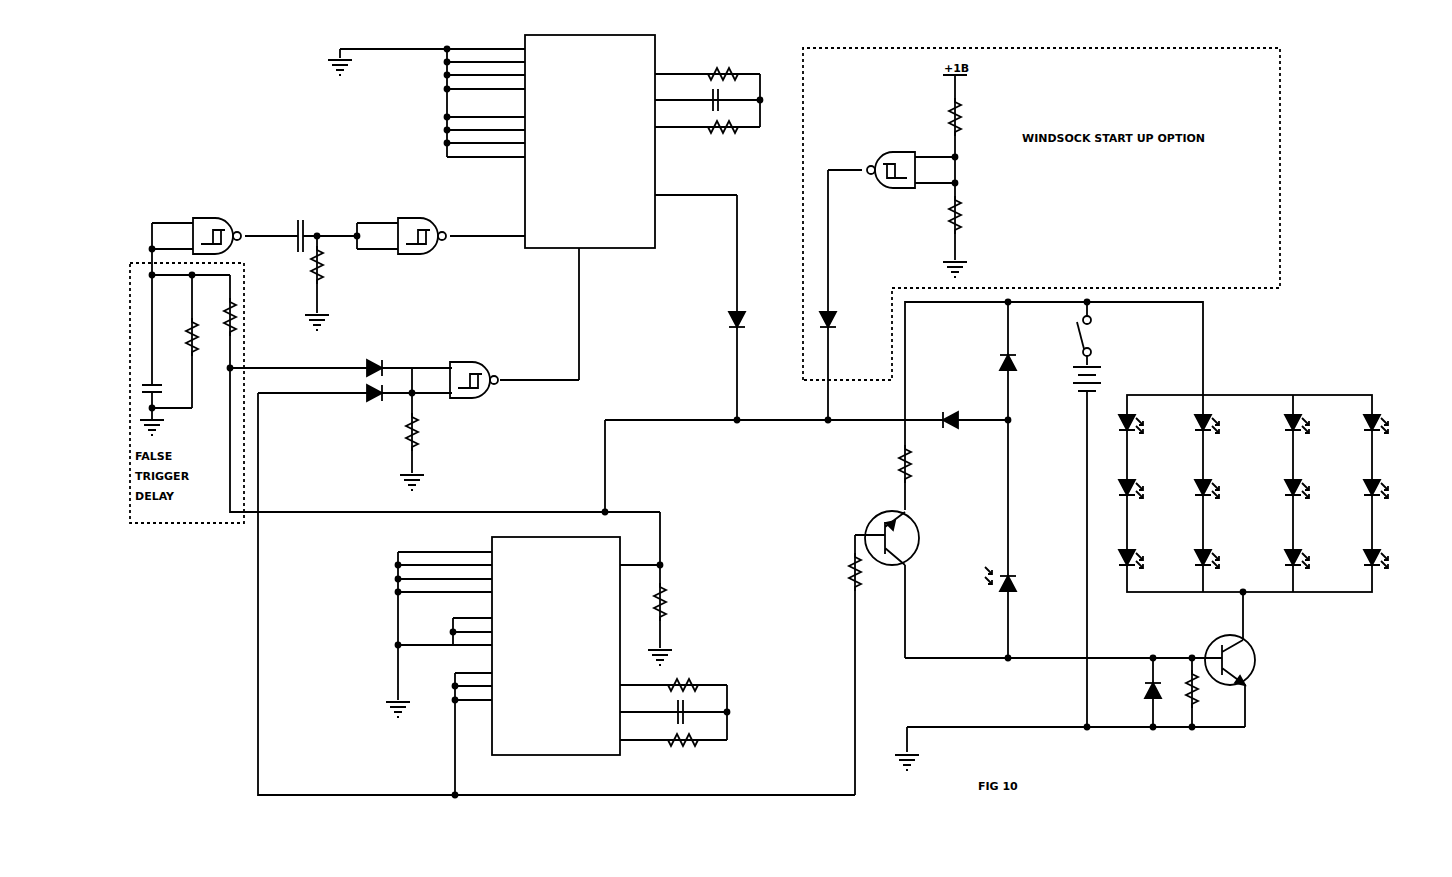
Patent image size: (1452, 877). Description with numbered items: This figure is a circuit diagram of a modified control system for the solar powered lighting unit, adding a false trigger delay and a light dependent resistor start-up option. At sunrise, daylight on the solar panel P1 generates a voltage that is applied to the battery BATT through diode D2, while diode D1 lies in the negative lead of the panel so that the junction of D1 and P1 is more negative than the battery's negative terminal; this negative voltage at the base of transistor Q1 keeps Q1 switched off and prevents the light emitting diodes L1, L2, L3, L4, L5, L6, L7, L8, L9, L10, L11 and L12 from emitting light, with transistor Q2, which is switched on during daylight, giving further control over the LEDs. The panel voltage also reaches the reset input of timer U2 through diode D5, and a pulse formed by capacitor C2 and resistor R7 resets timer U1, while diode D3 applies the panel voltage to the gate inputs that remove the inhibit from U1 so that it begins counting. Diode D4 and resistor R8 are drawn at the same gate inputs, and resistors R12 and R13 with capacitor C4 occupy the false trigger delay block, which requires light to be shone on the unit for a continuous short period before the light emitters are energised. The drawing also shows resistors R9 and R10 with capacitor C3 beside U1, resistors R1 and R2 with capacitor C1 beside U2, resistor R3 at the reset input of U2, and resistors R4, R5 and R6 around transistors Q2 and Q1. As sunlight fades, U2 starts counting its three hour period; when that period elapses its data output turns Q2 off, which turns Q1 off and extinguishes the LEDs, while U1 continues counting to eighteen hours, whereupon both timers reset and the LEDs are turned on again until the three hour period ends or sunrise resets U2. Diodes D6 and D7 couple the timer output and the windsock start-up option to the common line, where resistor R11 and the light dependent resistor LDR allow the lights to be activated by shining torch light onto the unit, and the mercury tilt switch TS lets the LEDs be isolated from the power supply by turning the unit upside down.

The timer U1 is at (545, 196).
The timer U2 is at (525, 653).
The resistor 1M R1 is at (682, 679).
The resistor 120K R2 is at (688, 748).
The resistor 33K R3 is at (670, 614).
The resistor 10K R4 is at (840, 665).
The resistor 100K R5 is at (1209, 692).
The resistor 2K2 R6 is at (919, 466).
The resistor R7 is at (331, 283).
The resistor 100K R8 is at (426, 451).
The resistor 1M R9 is at (721, 68).
The resistor 120K R10 is at (725, 135).
The resistor 470K R11 is at (978, 117).
The resistor 200K R12 is at (253, 321).
The resistor 680K R13 is at (209, 346).
The capacitor 470N C1 is at (688, 710).
The capacitor 100N C2 is at (323, 223).
The capacitor 1U mono C3 is at (726, 99).
The capacitor 22U C4 is at (166, 402).
The diode D1 is at (1135, 692).
The diode D2 is at (980, 350).
The diode D3 is at (379, 360).
The diode 518 D4 is at (377, 400).
The diode D5 is at (937, 408).
The diode 518 D6 is at (752, 307).
The diode 518 D7 is at (843, 317).
The transistor Q1 is at (1257, 679).
The transistor Q2 is at (907, 538).
The solar panel P1 is at (1002, 589).
The mercury tilt switch TS is at (1124, 333).
The 12V battery BATT is at (1107, 377).
The light dependent resistor LDR is at (971, 234).
The light emitting diode L1 is at (1150, 555).
The light emitting diode L2 is at (1150, 485).
The light emitting diode L3 is at (1150, 420).
The light emitting diode L4 is at (1226, 420).
The light emitting diode L5 is at (1226, 485).
The light emitting diode L6 is at (1226, 555).
The light emitting diode L7 is at (1395, 555).
The light emitting diode L8 is at (1395, 485).
The light emitting diode L9 is at (1395, 420).
The light emitting diode L10 is at (1316, 420).
The light emitting diode L11 is at (1316, 485).
The light emitting diode L12 is at (1316, 555).